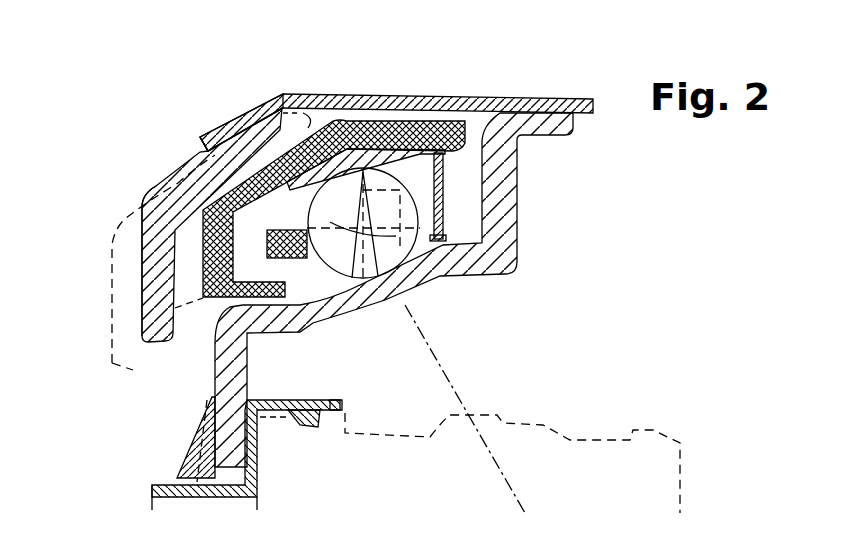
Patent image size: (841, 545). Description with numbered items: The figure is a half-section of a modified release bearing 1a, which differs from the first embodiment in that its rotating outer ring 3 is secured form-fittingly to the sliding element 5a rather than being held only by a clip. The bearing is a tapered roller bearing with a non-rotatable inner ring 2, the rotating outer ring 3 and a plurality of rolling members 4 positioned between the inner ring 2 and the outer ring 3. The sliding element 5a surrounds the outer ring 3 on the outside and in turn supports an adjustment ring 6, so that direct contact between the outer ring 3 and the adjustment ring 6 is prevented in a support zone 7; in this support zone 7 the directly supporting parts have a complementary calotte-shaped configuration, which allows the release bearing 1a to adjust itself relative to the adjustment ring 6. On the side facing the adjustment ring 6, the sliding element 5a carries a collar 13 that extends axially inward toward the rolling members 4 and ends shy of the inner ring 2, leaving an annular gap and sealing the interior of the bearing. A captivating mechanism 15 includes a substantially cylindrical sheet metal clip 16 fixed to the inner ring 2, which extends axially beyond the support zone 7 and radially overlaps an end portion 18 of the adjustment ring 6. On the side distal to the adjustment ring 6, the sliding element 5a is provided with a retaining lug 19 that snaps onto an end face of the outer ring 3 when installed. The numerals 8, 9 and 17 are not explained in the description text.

The release bearing 1a is at (232, 91).
The inner ring 2 is at (482, 168).
The outer ring 3 is at (425, 158).
The rolling members 4 is at (375, 252).
The sliding element 5a is at (446, 128).
The adjustment ring 6 is at (147, 192).
The support zone 7 is at (247, 110).
The support band 8 is at (222, 128).
The intermediate layer 9 is at (324, 121).
The collar 13 is at (300, 320).
The captivating mechanism 15 is at (197, 137).
The clip 16 is at (405, 97).
The pane edge 17 is at (239, 108).
The end portion 18 is at (282, 138).
The retaining lug 19 is at (453, 152).